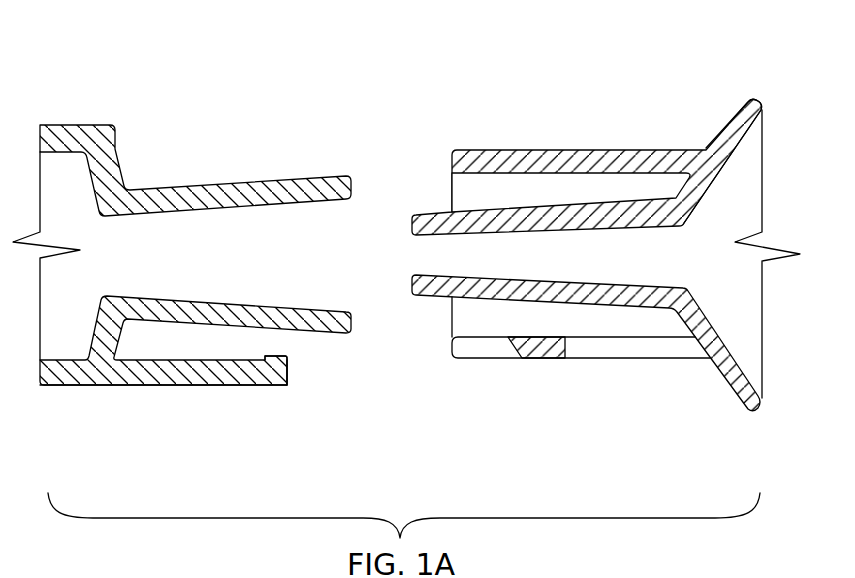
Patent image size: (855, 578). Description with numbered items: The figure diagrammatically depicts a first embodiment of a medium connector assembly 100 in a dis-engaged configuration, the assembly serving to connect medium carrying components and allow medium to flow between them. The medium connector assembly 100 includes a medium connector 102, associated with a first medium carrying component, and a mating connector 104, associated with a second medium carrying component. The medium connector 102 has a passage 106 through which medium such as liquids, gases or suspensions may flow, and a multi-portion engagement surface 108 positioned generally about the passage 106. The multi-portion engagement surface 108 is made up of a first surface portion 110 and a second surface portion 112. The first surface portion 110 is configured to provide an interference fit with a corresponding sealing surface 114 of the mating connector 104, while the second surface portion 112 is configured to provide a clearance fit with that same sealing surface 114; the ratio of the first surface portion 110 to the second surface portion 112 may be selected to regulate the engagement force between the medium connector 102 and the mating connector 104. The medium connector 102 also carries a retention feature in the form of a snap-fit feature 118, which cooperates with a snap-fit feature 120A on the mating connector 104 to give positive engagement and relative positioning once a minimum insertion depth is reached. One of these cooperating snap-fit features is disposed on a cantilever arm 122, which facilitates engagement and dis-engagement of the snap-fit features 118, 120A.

The medium connector assembly 100 is at (85, 42).
The medium connector 102 is at (755, 98).
The mating connector 104 is at (57, 125).
The passage 106 is at (620, 261).
The multi-portion engagement surface 108 is at (578, 195).
The first surface portion 110 is at (470, 212).
The second surface portion 112 is at (603, 308).
The sealing surface 114 is at (223, 296).
The snap-fit feature 118 is at (542, 358).
The snap-fit feature 120A is at (293, 357).
The cantilever arm 122 is at (253, 385).